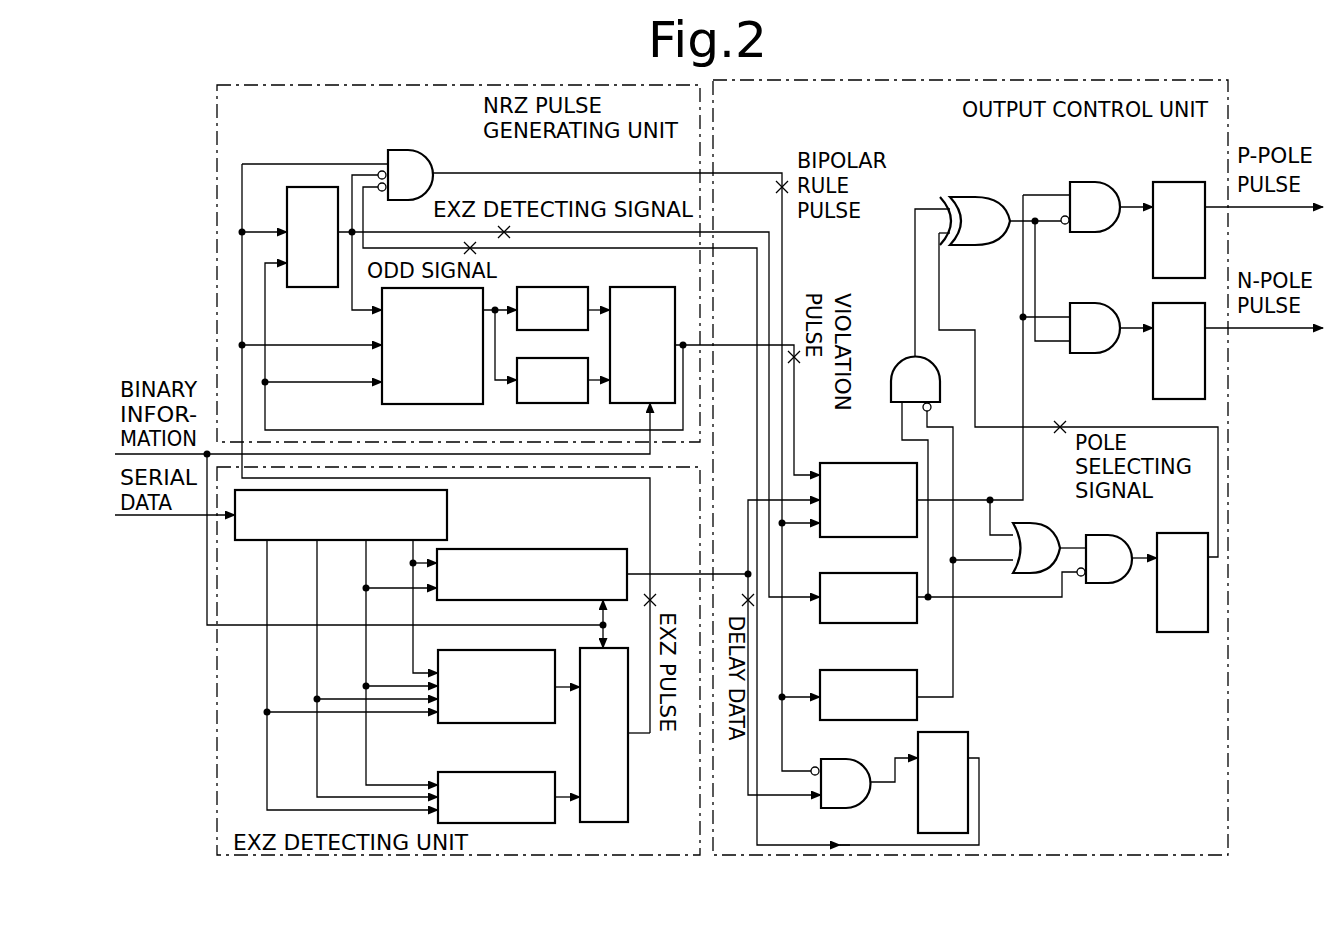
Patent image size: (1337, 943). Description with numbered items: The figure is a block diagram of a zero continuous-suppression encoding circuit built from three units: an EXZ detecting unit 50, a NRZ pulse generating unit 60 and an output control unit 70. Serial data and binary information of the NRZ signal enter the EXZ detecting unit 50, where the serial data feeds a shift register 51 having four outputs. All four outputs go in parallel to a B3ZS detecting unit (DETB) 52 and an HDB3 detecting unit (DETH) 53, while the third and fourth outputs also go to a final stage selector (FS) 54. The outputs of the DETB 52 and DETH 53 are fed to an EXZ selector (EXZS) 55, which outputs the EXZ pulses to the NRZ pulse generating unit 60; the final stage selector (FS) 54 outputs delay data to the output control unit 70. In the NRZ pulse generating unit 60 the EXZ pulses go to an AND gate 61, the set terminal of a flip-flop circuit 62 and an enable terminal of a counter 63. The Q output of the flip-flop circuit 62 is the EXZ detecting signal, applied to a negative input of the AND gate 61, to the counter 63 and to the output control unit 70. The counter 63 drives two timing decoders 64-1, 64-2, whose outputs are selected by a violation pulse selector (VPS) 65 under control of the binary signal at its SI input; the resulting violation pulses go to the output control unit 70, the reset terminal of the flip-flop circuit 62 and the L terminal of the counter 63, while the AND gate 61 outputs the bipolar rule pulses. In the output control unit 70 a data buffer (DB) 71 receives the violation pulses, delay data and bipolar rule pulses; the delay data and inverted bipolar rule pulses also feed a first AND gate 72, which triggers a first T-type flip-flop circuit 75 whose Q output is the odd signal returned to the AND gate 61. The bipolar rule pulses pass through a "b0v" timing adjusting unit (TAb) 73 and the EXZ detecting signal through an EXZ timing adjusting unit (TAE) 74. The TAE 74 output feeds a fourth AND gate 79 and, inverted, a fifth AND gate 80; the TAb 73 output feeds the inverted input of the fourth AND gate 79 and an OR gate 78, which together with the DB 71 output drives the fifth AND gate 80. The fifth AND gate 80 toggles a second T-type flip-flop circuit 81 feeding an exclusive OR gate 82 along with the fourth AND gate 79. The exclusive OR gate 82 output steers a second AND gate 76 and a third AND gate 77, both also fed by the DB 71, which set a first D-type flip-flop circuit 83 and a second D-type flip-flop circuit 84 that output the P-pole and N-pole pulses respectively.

The EXZ detecting unit 50 is at (217, 852).
The shift register 51 is at (447, 498).
The B3ZS detecting unit (DETB) 52 is at (525, 772).
The HDB3 detecting unit (DETH) 53 is at (445, 723).
The final stage selector (FS) 54 is at (600, 549).
The EXZ selector (EXZS) 55 is at (628, 806).
The NRZ pulse generating unit 60 is at (217, 153).
The AND gate 61 is at (388, 158).
The flip-flop circuit 62 is at (314, 287).
The counter 63 is at (382, 396).
The timing decoder (TD) 64-1 is at (522, 287).
The timing decoder (TD) 64-2 is at (531, 340).
The violation pulse selector (VPS) 65 is at (635, 287).
The output control unit 70 is at (1228, 128).
The data buffer (DB) 71 is at (836, 463).
The first AND gate 72 is at (826, 808).
The "b0v" timing adjusting unit (TAb) 73 is at (832, 670).
The EXZ timing adjusting unit (TAE) 74 is at (858, 573).
The first T-type flip-flop circuit 75 is at (968, 742).
The second AND gate 76 is at (1082, 232).
The third AND gate 77 is at (1092, 353).
The OR gate 78 is at (1014, 572).
The fourth AND gate 79 is at (892, 380).
The fifth AND gate 80 is at (1102, 583).
The second T-type flip-flop circuit 81 is at (1171, 632).
The exclusive OR gate 82 is at (978, 197).
The first D-type flip-flop circuit 83 is at (1153, 269).
The second D-type flip-flop circuit 84 is at (1153, 394).